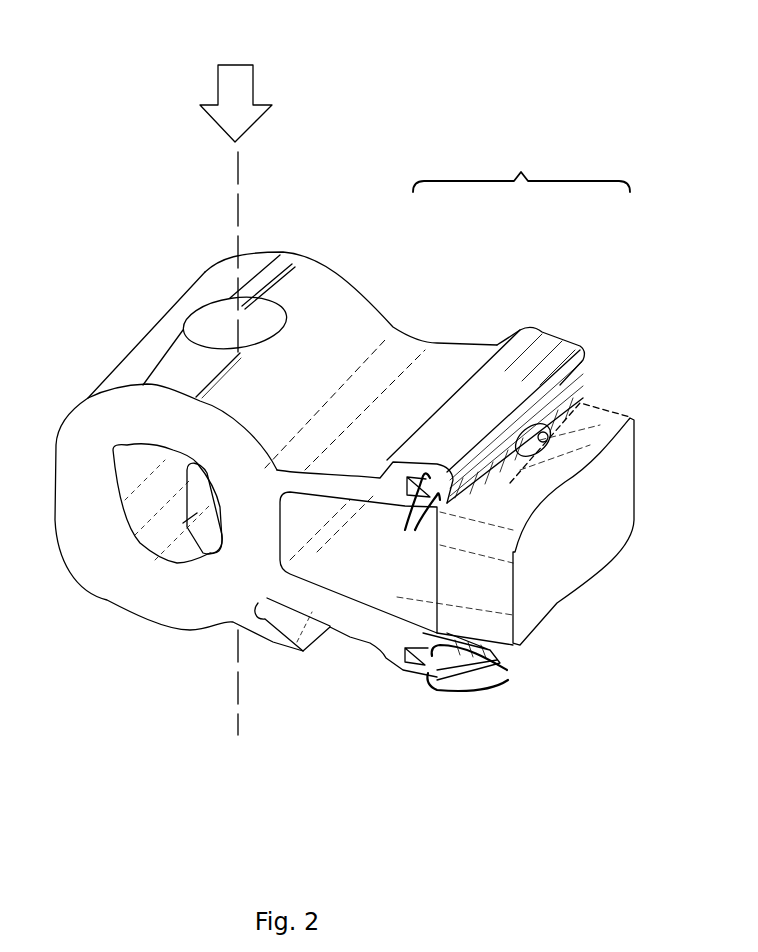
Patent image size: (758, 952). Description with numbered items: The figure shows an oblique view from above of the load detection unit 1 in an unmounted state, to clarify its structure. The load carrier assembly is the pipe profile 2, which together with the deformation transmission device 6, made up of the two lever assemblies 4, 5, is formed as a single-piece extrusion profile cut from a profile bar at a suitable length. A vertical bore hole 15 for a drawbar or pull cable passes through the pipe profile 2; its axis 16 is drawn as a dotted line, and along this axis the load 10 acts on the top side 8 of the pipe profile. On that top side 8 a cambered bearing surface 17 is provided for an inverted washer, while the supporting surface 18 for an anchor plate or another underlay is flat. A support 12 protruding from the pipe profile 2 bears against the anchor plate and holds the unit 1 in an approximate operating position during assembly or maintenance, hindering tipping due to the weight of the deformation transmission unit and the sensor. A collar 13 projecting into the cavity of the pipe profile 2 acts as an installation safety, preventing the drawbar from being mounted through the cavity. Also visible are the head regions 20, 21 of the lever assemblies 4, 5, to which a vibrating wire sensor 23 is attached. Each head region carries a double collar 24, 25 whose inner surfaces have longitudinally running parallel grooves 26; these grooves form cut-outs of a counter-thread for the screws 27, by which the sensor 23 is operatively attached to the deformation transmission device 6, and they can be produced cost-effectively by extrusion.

The load detection unit 1 is at (587, 85).
The pipe profile 2 is at (74, 495).
The lever assembly 4 is at (440, 344).
The lever assembly 5 is at (338, 664).
The deformation transmission device 6 is at (521, 160).
The top side 8 is at (333, 292).
The load 10 is at (238, 86).
The support 12 is at (283, 643).
The collar 13 is at (188, 540).
The vertical bore hole 15 is at (211, 306).
The axis 16 is at (235, 220).
The cambered bearing surface 17 is at (290, 267).
The supporting surface 18 is at (170, 622).
The head region 20 is at (600, 326).
The head region 21 is at (458, 712).
The vibrating wire sensor 23 is at (549, 520).
The double collar 24 is at (451, 425).
The double collar 25 is at (403, 503).
The parallel grooves 26 is at (465, 582).
The screws 27 is at (547, 423).